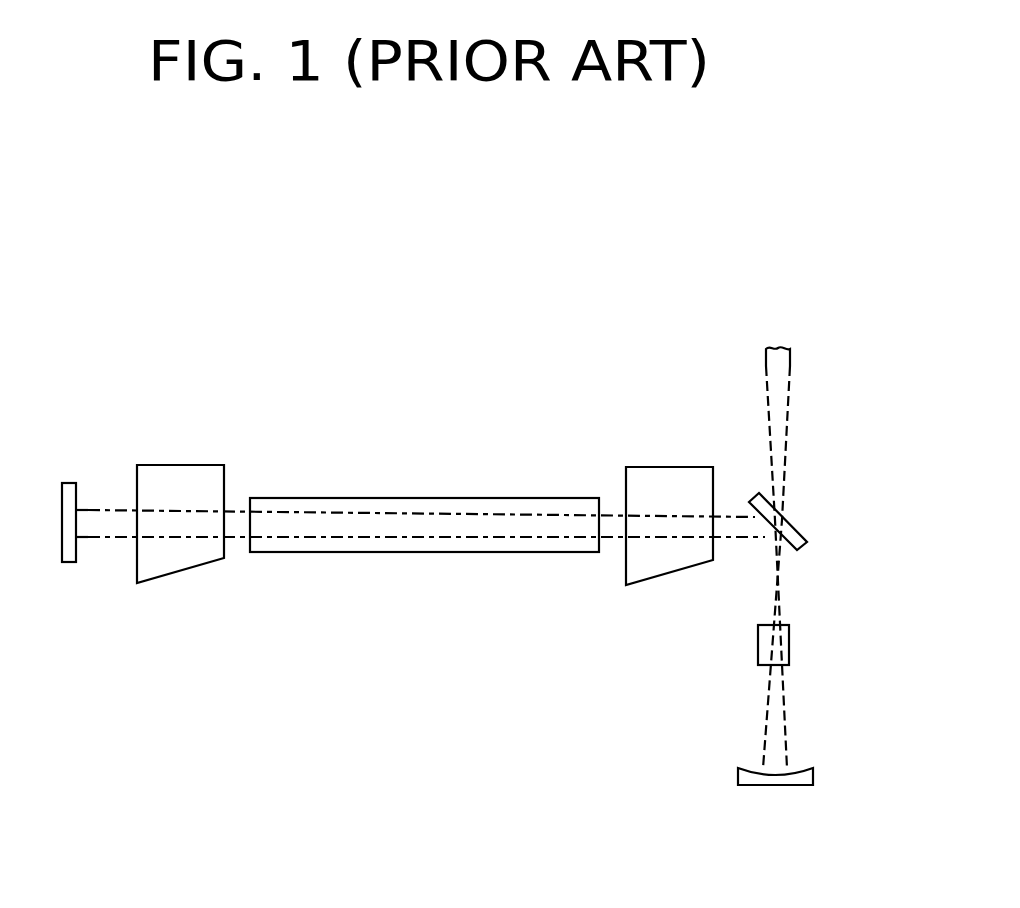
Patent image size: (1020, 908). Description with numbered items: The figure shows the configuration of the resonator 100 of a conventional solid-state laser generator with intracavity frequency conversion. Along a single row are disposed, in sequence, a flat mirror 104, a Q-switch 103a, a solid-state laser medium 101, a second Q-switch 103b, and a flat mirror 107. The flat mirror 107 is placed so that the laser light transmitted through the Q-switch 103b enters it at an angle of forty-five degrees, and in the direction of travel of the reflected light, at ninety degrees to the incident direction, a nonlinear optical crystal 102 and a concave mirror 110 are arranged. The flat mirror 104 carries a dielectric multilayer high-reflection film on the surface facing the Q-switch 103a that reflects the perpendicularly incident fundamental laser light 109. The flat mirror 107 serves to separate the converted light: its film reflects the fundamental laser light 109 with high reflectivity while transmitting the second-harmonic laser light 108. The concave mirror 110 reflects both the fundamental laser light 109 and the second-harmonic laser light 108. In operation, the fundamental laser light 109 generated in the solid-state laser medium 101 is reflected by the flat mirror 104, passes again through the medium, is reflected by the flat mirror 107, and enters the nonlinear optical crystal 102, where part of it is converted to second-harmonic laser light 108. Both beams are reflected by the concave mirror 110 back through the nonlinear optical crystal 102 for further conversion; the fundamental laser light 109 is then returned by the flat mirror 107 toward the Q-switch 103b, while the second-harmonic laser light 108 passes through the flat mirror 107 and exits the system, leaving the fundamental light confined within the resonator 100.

The resonator 100 is at (778, 232).
The solid-state laser medium 101 is at (340, 552).
The nonlinear optical crystal 102 is at (758, 650).
The Q-switch 103a is at (175, 465).
The Q-switch 103b is at (680, 467).
The flat mirror 104 is at (68, 562).
The flat mirror 107 is at (790, 522).
The second-harmonic laser light 108 is at (792, 386).
The fundamental laser light 109 is at (91, 508).
The concave mirror 110 is at (765, 785).